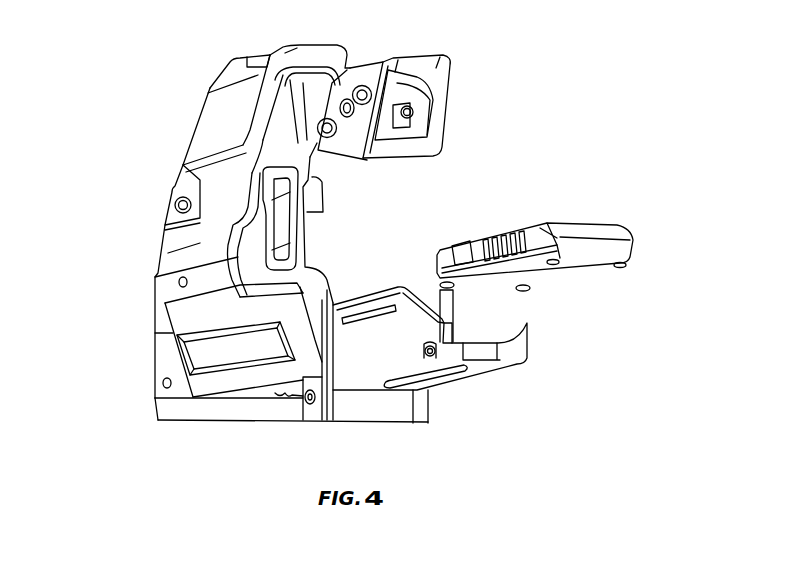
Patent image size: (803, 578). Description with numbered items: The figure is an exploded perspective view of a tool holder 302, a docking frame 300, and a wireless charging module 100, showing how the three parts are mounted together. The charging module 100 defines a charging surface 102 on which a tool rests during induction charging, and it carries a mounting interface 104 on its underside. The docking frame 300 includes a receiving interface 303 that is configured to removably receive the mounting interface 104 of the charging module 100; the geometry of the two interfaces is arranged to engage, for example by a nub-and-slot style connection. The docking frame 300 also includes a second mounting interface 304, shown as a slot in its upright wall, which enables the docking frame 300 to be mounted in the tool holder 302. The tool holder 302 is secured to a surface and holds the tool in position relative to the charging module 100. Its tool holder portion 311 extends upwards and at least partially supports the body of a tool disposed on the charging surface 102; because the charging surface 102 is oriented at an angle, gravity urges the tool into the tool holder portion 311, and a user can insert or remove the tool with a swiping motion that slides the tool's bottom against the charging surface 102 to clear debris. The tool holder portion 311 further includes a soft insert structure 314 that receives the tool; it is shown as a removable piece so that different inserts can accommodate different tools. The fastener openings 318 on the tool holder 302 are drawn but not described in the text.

The wireless charging module 100 is at (575, 314).
The charging surface 102 is at (522, 224).
The mounting interface 104 is at (458, 250).
The docking frame 300 is at (508, 398).
The tool holder 302 is at (122, 306).
The receiving interface 303 is at (440, 292).
The second mounting interface 304 is at (352, 334).
The tool holder portion 311 is at (150, 196).
The soft insert structure 314 is at (478, 114).
The fastener holes 318 is at (160, 269).